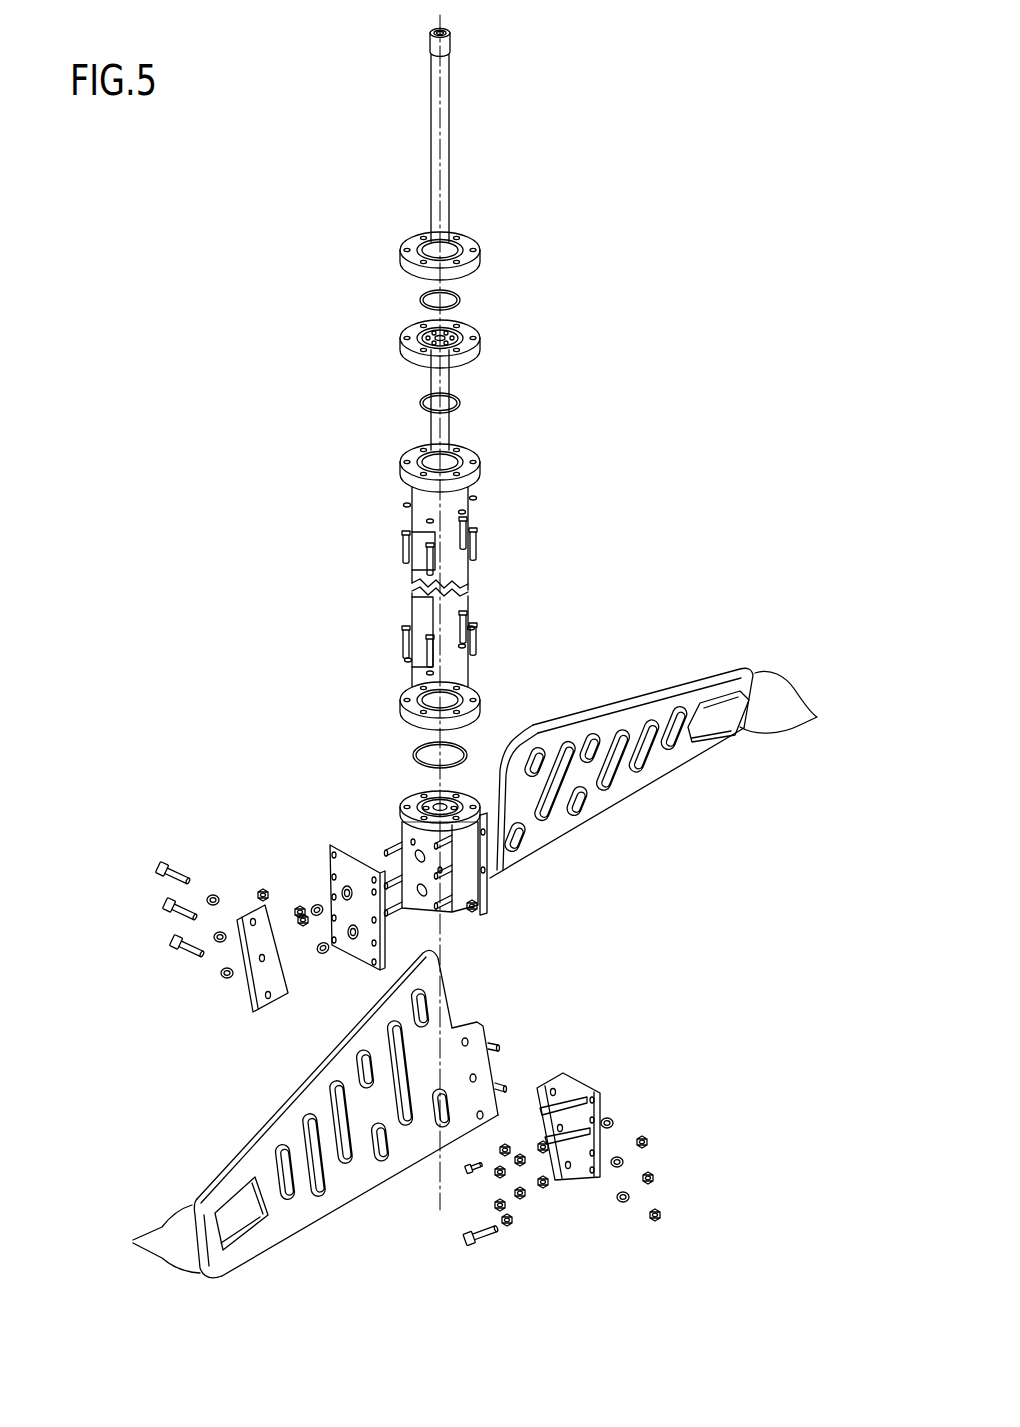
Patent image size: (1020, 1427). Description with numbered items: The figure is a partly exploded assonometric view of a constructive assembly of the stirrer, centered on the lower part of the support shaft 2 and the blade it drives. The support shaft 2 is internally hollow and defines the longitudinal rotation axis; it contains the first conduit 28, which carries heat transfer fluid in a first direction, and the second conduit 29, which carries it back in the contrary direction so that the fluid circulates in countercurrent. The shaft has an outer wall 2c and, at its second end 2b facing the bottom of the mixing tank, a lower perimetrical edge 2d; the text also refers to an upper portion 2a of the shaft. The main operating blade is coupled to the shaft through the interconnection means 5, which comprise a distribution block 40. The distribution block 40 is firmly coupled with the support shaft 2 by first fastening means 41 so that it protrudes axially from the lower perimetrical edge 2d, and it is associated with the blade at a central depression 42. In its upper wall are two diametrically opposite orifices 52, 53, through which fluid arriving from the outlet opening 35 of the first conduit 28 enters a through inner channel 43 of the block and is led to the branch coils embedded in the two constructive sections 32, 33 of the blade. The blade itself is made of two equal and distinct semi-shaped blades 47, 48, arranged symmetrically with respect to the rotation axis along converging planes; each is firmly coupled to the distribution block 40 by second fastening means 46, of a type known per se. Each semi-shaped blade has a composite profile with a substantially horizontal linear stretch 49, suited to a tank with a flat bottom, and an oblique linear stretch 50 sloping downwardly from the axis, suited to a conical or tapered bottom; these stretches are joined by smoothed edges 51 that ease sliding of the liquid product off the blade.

The second conduit 29 is at (452, 127).
The first conduit 28 is at (415, 452).
The upper mast section 2a is at (500, 462).
The support shaft 2 is at (423, 563).
The outer wall 2c is at (468, 582).
The second end 2b is at (400, 672).
The first fastening means 41 is at (492, 662).
The lower perimetrical edge 2d is at (398, 708).
The outlet opening 35 is at (415, 735).
The orifice 53 is at (413, 791).
The central depression 42 is at (462, 792).
The orifice 52 is at (483, 772).
The interconnection means 5 is at (518, 884).
The distribution block 40 is at (462, 892).
The through inner channel 43 is at (398, 830).
The second fastening means 46 is at (247, 860).
The constructive section 33 is at (673, 760).
The horizontal linear stretch 49 is at (603, 812).
The oblique linear stretch 50 is at (618, 702).
The semi-shaped blade 48 is at (700, 667).
The smoothed edge 51 is at (445, 952).
The constructive section 32 is at (288, 1213).
The semi-shaped blade 47 is at (218, 1130).